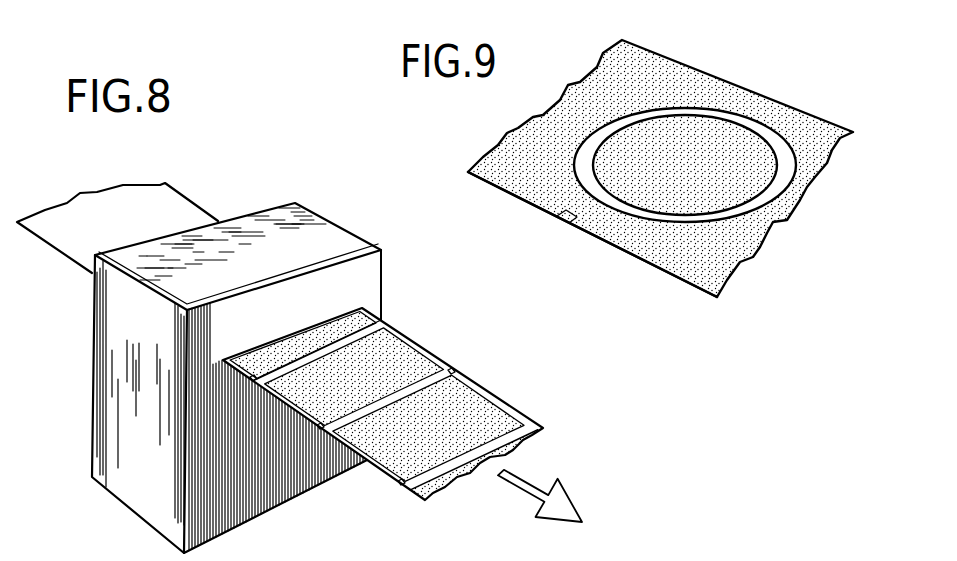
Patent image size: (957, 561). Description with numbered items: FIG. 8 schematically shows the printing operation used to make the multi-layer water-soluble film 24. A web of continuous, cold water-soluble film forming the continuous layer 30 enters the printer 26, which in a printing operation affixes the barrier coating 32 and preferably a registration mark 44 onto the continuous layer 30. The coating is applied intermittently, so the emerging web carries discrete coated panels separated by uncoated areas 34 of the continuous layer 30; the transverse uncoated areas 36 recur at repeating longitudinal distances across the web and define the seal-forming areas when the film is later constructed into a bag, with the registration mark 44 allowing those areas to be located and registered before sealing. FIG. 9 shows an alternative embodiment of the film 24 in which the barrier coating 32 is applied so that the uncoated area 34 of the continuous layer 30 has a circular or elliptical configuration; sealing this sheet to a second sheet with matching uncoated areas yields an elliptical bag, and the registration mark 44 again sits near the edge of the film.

In FIG. 9, the multi-layer water-soluble film 24 is at (688, 64).
In FIG. 8, the printer 26 is at (119, 357).
In FIG. 8, the continuous layer 30 is at (185, 210).
In FIG. 8, the barrier coating 32 is at (481, 404).
In FIG. 9, the barrier coating 32 is at (742, 98).
In FIG. 8, the uncoated areas 34 is at (367, 461).
In FIG. 9, the uncoated areas 34 is at (640, 218).
In FIG. 8, the transverse uncoated areas 36 is at (452, 372).
In FIG. 8, the registration mark 44 is at (403, 483).
In FIG. 9, the registration mark 44 is at (558, 215).